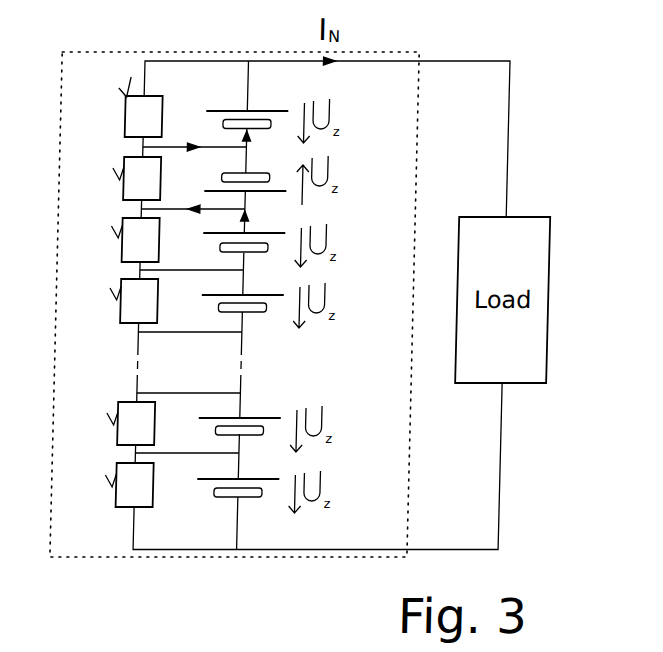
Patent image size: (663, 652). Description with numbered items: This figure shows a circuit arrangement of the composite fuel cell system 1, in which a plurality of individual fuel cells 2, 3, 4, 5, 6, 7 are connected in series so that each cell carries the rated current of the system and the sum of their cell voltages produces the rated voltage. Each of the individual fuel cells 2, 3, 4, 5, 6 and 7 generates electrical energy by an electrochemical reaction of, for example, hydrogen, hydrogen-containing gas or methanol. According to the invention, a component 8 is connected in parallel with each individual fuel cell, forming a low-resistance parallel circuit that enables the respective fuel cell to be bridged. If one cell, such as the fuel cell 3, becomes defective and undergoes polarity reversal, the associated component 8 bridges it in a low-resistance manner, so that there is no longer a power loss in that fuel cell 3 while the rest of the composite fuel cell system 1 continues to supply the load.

The composite fuel cell system 1 is at (196, 563).
The individual fuel cell 2 is at (213, 120).
The individual fuel cell 3 is at (213, 182).
The individual fuel cell 4 is at (213, 247).
The individual fuel cell 5 is at (213, 305).
The individual fuel cell 6 is at (213, 428).
The individual fuel cell 7 is at (213, 490).
The component 8 is at (121, 481).